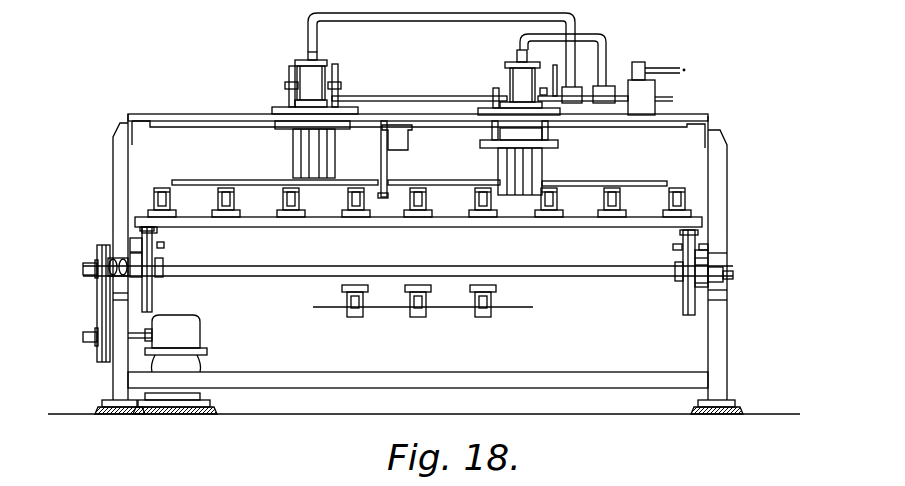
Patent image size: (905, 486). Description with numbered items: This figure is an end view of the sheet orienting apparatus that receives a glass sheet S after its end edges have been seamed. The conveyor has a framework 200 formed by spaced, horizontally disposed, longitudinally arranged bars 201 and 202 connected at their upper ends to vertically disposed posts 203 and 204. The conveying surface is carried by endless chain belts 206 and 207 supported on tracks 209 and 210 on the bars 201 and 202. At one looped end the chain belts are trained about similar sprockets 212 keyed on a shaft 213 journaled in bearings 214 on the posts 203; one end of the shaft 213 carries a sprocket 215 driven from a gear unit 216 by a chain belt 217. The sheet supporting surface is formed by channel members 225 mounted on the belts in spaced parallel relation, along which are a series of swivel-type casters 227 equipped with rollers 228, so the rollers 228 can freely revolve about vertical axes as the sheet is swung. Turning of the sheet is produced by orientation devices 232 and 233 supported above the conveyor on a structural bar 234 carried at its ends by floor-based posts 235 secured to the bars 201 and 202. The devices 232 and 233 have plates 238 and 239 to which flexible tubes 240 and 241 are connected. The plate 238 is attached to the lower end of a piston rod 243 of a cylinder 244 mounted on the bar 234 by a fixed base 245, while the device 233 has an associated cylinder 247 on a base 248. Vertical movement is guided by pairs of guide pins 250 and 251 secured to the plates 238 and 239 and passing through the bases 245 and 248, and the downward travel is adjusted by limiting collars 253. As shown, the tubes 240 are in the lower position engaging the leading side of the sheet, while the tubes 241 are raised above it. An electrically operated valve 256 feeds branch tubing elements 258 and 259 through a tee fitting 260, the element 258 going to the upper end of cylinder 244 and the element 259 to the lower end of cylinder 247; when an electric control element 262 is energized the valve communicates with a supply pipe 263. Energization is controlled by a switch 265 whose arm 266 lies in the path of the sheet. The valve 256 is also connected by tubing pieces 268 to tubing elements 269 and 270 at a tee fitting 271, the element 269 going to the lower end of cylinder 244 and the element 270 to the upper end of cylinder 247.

The framework 200 is at (105, 196).
The bar 201 is at (712, 259).
The bar 202 is at (130, 246).
The post 203 is at (715, 338).
The post 204 is at (118, 366).
The chain belt 206 is at (688, 290).
The chain belt 207 is at (156, 295).
The track 209 is at (705, 247).
The track 210 is at (165, 244).
The sprocket 212 is at (165, 266).
The shaft 213 is at (237, 276).
The bearing 214 is at (117, 281).
The sprocket 215 is at (83, 268).
The gear unit 216 is at (178, 331).
The chain belt 217 is at (97, 312).
The channel member 225 is at (248, 220).
The swivel-type caster 227 is at (447, 240).
The roller 228 is at (163, 186).
The orientation device 232 is at (547, 157).
The orientation device 233 is at (292, 160).
The structural bar 234 is at (196, 114).
The floor-based post 235 is at (118, 158).
The plate 238 is at (470, 161).
The plate 239 is at (302, 125).
The flexible tube 240 is at (520, 177).
The flexible tube 241 is at (306, 158).
The piston rod 243 is at (522, 133).
The cylinder 244 is at (523, 78).
The fixed base 245 is at (487, 110).
The cylinder 247 is at (312, 85).
The base 248 is at (343, 110).
The guide pin 250 is at (496, 88).
The guide pin 251 is at (291, 70).
The limiting collar 253 is at (288, 84).
The electrically operated valve 256 is at (643, 89).
The tubing element 258 is at (602, 35).
The tubing element 259 is at (421, 95).
The tee fitting 260 is at (607, 88).
The electric control element 262 is at (647, 67).
The supply pipe 263 is at (674, 100).
The switch 265 is at (395, 140).
The arm 266 is at (378, 200).
The tubing piece 268 is at (623, 99).
The tubing element 269 is at (554, 69).
The tubing element 270 is at (308, 24).
The tee fitting 271 is at (575, 100).
The glass sheet S is at (222, 178).